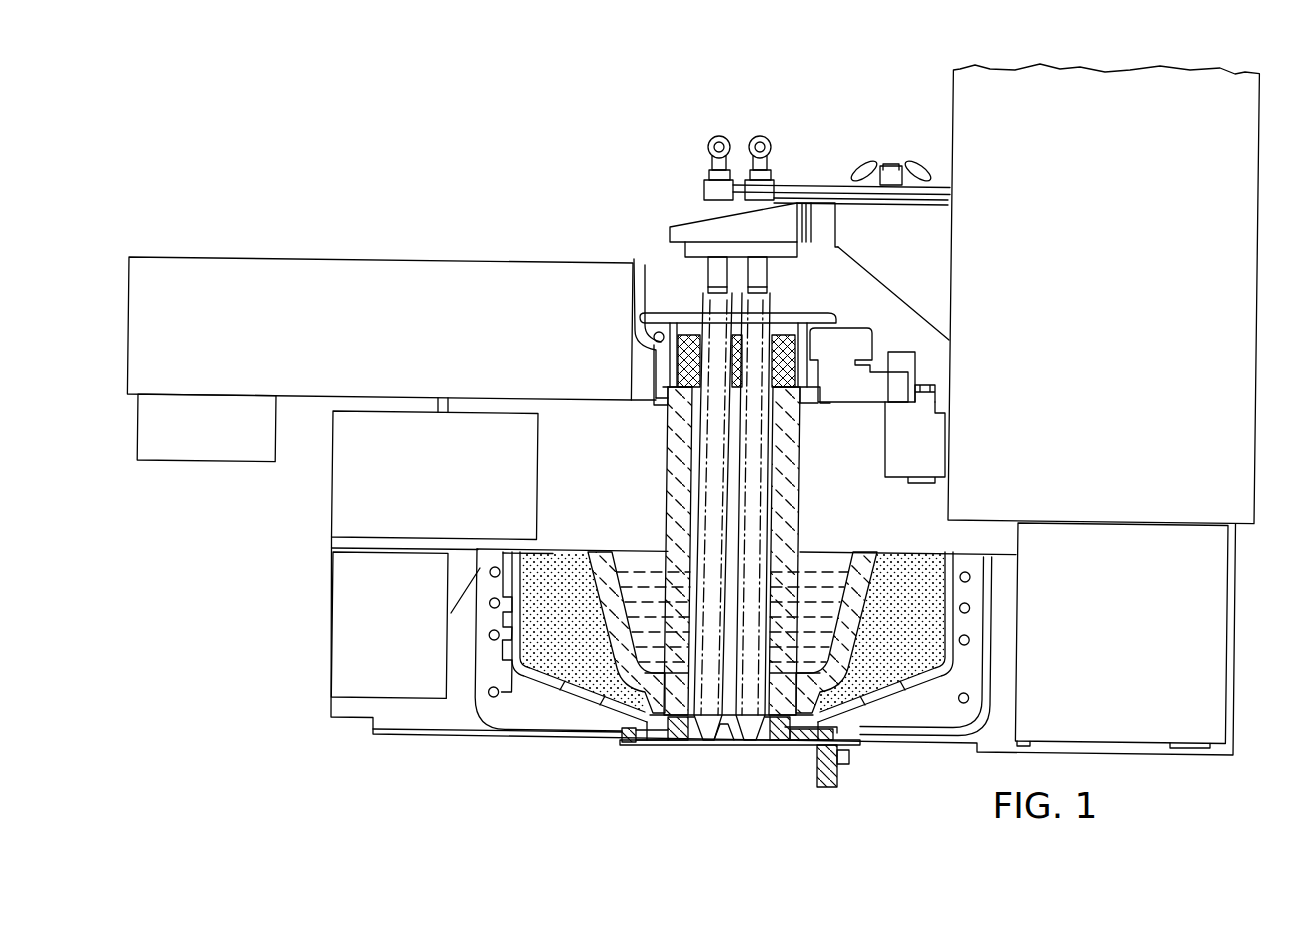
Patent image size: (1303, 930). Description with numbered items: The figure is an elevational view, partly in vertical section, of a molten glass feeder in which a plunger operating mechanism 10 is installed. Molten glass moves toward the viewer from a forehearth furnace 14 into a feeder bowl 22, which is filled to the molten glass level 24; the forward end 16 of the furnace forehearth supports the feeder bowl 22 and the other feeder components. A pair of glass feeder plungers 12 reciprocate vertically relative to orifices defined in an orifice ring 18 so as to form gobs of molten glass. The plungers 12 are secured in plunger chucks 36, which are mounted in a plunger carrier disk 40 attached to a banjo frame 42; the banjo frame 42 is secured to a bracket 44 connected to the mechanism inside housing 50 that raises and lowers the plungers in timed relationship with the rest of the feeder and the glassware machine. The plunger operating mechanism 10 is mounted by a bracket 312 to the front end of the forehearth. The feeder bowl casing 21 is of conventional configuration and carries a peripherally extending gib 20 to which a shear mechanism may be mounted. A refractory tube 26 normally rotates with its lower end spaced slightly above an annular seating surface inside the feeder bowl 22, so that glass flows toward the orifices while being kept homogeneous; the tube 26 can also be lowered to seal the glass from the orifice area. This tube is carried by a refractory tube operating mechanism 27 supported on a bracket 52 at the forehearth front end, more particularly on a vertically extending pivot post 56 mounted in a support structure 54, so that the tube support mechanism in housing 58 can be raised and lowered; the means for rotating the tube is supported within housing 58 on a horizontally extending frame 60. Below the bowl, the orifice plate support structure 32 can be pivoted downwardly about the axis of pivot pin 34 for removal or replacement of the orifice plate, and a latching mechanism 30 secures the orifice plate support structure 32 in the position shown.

The plunger operating mechanism 10 is at (853, 150).
The glass feeder plunger 12 is at (756, 467).
The forehearth furnace 14 is at (943, 752).
The forward end of the furnace forehearth 16 is at (1003, 657).
The orifice ring 18 is at (696, 760).
The gib 20 is at (571, 640).
The feeder bowl casing 21 is at (935, 560).
The feeder bowl 22 is at (834, 562).
The molten glass level 24 is at (640, 568).
The refractory tube 26 is at (800, 430).
The refractory tube operating mechanism 27 is at (469, 246).
The latching mechanism 30 is at (836, 772).
The orifice plate support structure 32 is at (802, 750).
The pivot pin 34 is at (630, 750).
The plunger chuck 36 is at (707, 270).
The plunger carrier disk 40 is at (676, 250).
The banjo frame 42 is at (697, 222).
The bracket 44 is at (888, 285).
The housing 50 is at (1258, 258).
The bracket 52 is at (397, 624).
The support structure 54 is at (333, 486).
The pivot post 56 is at (500, 406).
The housing 58 is at (582, 263).
The frame 60 is at (624, 406).
The bracket 312 is at (1083, 664).